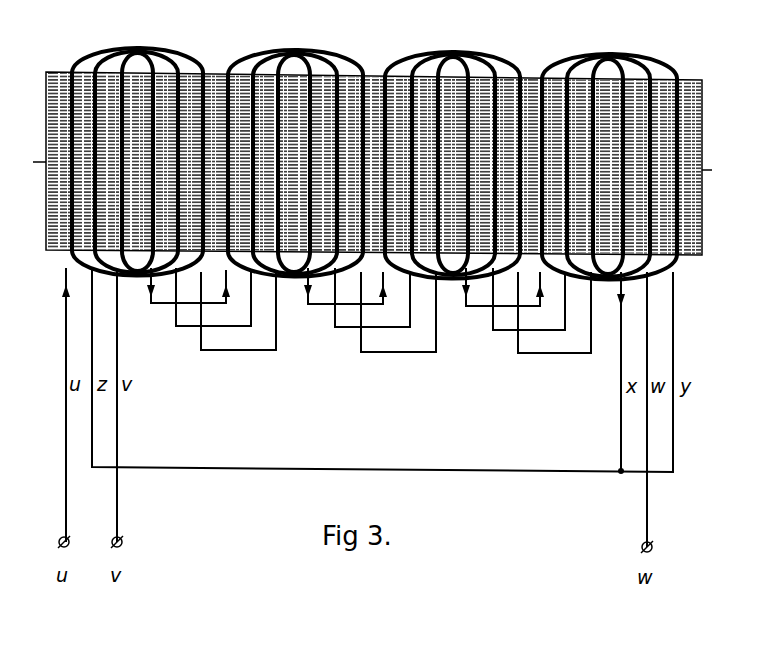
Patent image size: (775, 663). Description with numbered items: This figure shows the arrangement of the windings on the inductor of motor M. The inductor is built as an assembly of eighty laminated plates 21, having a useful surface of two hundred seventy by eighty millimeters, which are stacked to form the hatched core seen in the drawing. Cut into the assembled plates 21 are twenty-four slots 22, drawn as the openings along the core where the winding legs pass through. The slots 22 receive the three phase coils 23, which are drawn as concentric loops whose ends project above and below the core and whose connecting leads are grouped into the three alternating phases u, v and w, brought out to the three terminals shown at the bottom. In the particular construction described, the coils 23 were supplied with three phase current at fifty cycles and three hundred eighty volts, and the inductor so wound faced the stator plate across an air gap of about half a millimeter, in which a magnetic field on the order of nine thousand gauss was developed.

The plates 21 is at (703, 79).
The slots 22 is at (680, 79).
The three phase coils 23 is at (88, 53).